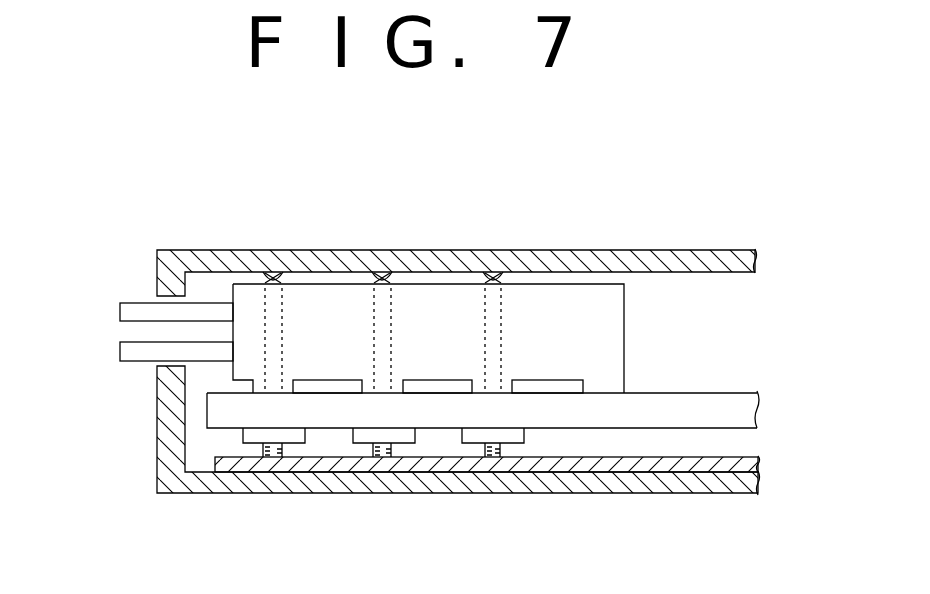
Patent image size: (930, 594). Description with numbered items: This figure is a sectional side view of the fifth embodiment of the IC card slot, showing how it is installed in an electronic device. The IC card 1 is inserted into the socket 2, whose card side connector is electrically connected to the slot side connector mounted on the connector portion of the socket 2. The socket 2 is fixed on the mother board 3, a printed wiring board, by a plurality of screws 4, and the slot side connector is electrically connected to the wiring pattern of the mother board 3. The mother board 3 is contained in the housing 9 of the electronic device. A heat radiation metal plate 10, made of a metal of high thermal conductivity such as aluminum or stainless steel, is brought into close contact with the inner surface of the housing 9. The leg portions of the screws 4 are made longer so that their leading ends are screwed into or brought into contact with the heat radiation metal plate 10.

The IC card 1 is at (137, 303).
The socket 2 is at (620, 302).
The mother board 3 is at (650, 397).
The screws 4 is at (273, 272).
The housing 9 is at (224, 248).
The heat radiation metal plate 10 is at (404, 467).